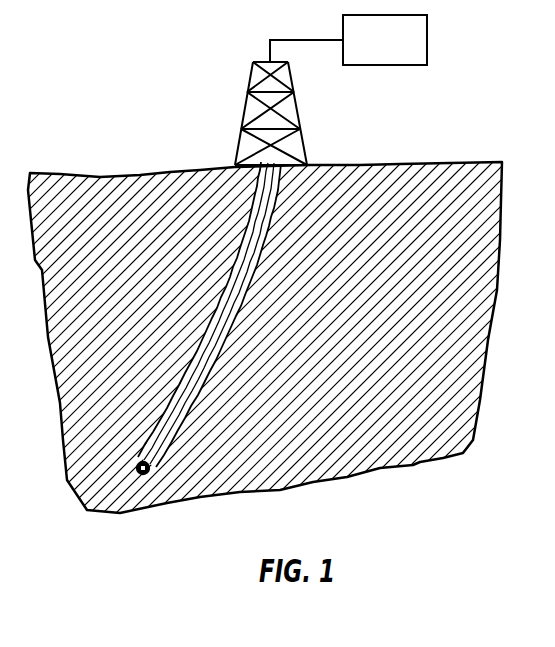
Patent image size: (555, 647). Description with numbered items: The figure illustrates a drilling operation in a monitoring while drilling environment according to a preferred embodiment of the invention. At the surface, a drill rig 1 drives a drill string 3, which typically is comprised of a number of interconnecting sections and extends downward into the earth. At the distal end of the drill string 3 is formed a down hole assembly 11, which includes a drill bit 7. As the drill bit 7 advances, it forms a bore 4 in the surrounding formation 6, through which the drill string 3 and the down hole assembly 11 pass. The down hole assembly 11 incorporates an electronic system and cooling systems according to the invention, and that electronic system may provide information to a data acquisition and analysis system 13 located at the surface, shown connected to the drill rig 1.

The drill rig 1 is at (247, 113).
The drill string 3 is at (263, 245).
The bore 4 is at (282, 192).
The formation 6 is at (277, 323).
The drill bit 7 is at (150, 473).
The down hole assembly 11 is at (195, 397).
The data acquisition and analysis system 13 is at (387, 65).